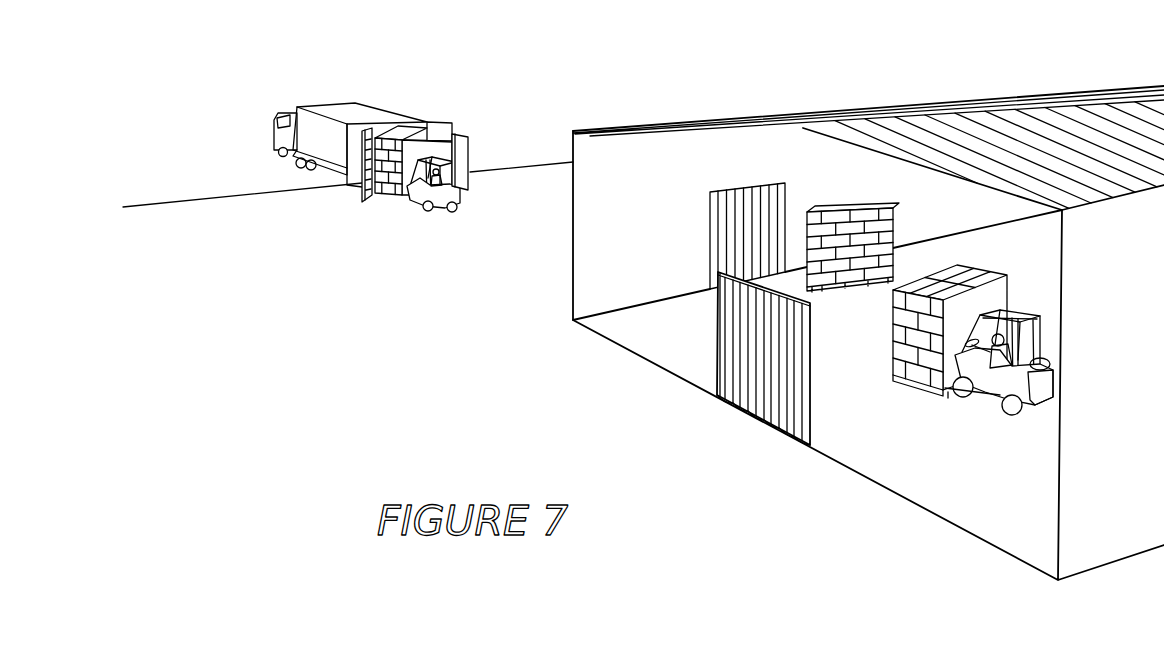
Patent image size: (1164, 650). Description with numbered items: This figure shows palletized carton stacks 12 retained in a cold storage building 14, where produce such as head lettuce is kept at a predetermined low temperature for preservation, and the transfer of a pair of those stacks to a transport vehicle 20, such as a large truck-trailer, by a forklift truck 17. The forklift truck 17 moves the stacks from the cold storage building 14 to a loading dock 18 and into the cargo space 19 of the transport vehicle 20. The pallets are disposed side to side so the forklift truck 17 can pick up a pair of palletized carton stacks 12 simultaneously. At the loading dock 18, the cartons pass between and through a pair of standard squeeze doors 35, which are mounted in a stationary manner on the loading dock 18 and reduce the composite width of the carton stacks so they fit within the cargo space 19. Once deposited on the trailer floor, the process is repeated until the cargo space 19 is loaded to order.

The palletized carton stacks 12 is at (393, 195).
The cold storage building 14 is at (930, 100).
The forklift truck 17 is at (427, 210).
The loading dock 18 is at (353, 220).
The cargo space 19 is at (407, 130).
The transport vehicle 20 is at (366, 100).
The squeeze doors 35 is at (460, 147).